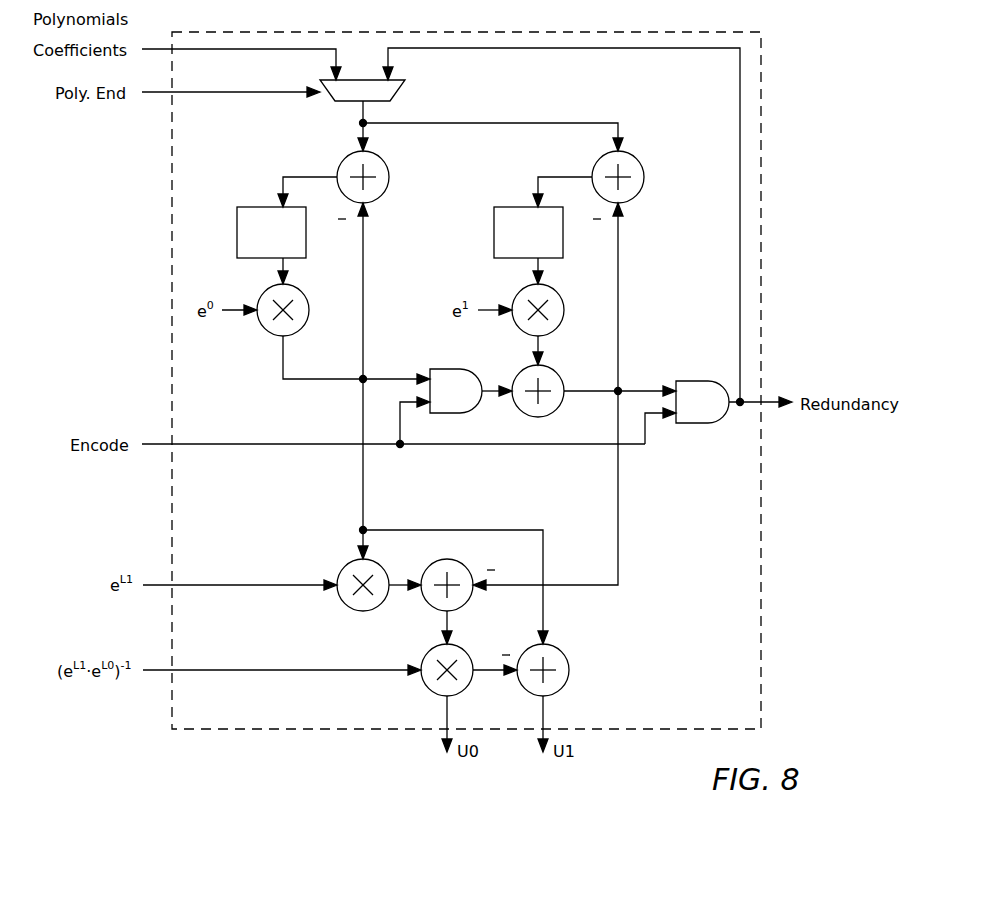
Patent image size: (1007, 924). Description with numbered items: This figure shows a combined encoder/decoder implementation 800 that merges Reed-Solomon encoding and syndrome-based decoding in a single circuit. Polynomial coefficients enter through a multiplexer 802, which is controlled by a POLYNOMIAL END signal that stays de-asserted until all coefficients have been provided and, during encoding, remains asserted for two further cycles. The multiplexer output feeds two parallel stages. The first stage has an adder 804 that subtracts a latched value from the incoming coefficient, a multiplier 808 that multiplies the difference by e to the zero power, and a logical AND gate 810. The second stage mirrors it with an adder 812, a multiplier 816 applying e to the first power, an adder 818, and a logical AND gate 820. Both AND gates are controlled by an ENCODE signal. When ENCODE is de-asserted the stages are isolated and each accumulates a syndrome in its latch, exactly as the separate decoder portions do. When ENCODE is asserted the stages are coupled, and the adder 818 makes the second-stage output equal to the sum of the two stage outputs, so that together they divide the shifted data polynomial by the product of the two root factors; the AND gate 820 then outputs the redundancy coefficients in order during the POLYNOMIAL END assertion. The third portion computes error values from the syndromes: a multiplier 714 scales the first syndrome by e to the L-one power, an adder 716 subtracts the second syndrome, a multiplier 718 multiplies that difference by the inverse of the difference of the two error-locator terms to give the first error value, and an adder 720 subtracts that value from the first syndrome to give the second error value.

The combined encoder/decoder implementation 800 is at (752, 723).
The multiplexer 802 is at (400, 84).
The adder 804 is at (375, 200).
The multiplier 808 is at (266, 333).
The logical AND gate 810 is at (450, 413).
The adder 812 is at (630, 200).
The multiplier 816 is at (550, 333).
The adder 818 is at (551, 413).
The logical AND gate 820 is at (692, 423).
The multiplier 714 is at (365, 611).
The adder 716 is at (460, 609).
The multiplier 718 is at (430, 693).
The adder 720 is at (557, 693).